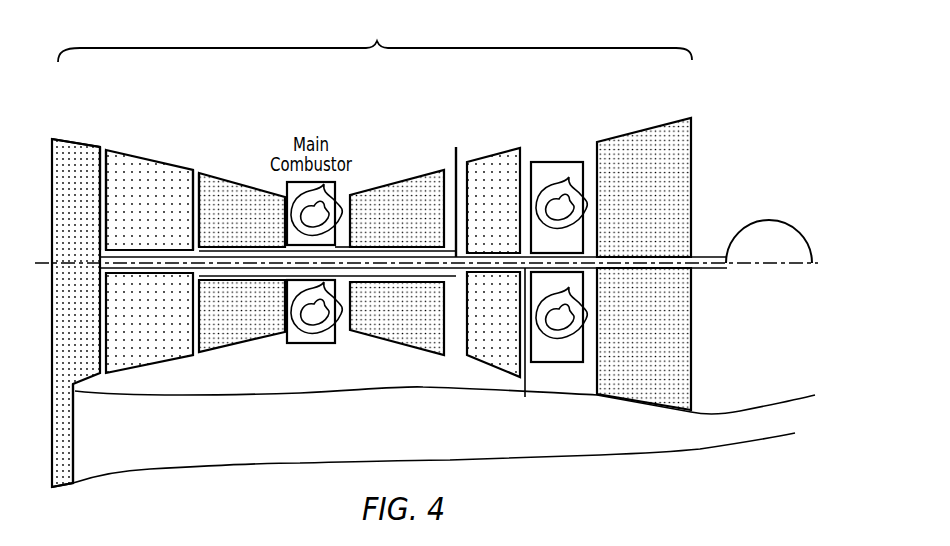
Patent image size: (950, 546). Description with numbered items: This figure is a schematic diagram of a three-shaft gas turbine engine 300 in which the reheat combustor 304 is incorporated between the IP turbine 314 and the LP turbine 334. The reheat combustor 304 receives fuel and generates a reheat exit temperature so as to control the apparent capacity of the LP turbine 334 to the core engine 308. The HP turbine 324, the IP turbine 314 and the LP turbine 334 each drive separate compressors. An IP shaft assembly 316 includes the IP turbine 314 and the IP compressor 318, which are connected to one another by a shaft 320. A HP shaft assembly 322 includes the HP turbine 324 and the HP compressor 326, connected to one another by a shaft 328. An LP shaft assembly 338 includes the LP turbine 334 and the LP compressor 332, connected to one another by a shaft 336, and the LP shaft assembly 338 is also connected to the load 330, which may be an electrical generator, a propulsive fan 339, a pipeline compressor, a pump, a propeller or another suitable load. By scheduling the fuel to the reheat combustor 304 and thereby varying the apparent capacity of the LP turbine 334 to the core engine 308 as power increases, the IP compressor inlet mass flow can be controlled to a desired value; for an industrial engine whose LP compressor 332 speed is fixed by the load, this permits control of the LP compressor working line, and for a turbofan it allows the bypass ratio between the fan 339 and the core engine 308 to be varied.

The gas turbine engine 300 is at (711, 106).
The reheat combustor 304 is at (582, 161).
The core engine 308 is at (375, 36).
The IP turbine 314 is at (490, 156).
The IP shaft assembly 316 is at (103, 147).
The IP compressor 318 is at (170, 166).
The shaft 320 is at (460, 187).
The HP shaft assembly 322 is at (196, 170).
The HP turbine 324 is at (417, 177).
The HP compressor 326 is at (240, 184).
The shaft 328 is at (342, 245).
The load 330 is at (767, 218).
The LP compressor 332 is at (78, 143).
The LP turbine 334 is at (658, 123).
The shaft 336 is at (527, 347).
The LP shaft assembly 338 is at (50, 137).
The propulsive fan 339 is at (65, 474).